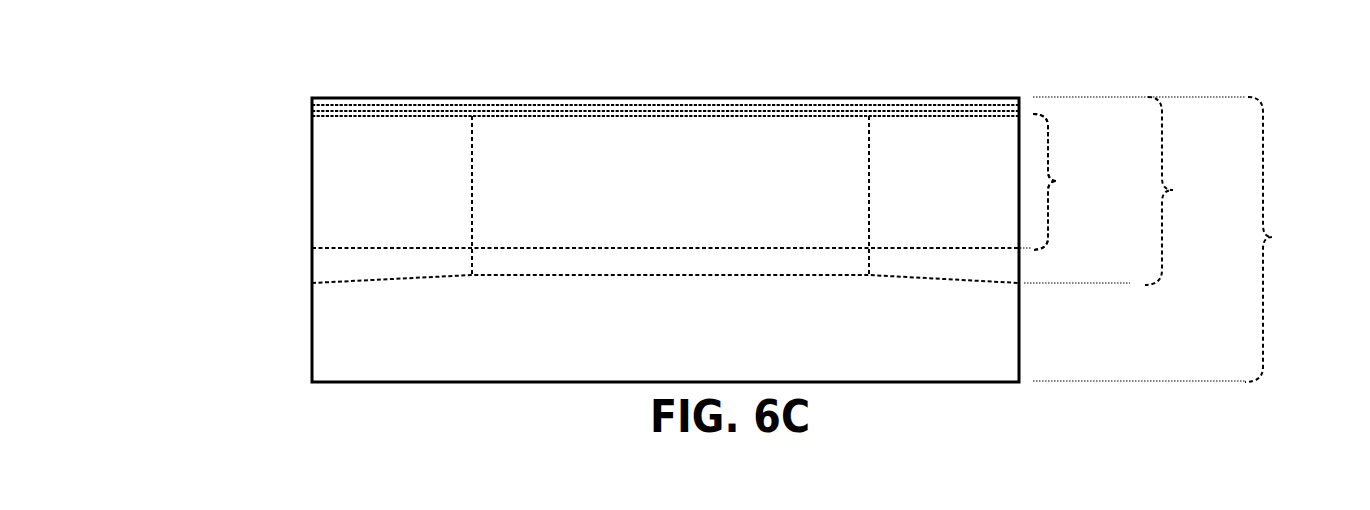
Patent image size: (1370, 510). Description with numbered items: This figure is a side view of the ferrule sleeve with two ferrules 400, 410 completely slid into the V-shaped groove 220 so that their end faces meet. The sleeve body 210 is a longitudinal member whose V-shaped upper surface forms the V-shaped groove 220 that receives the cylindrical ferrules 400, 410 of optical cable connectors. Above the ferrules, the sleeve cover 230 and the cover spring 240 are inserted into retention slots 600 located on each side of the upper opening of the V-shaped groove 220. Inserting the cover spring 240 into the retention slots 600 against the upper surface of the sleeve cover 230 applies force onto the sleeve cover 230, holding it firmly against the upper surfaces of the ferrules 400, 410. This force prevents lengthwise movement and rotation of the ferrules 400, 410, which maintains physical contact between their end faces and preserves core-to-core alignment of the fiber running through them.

The retention slots 600 is at (287, 109).
The cover spring 240 is at (937, 90).
The sleeve cover 230 is at (955, 126).
The ferrule 400 is at (1133, 173).
The ferrule 410 is at (1068, 182).
The V-shaped groove 220 is at (1122, 191).
The sleeve body 210 is at (1175, 239).